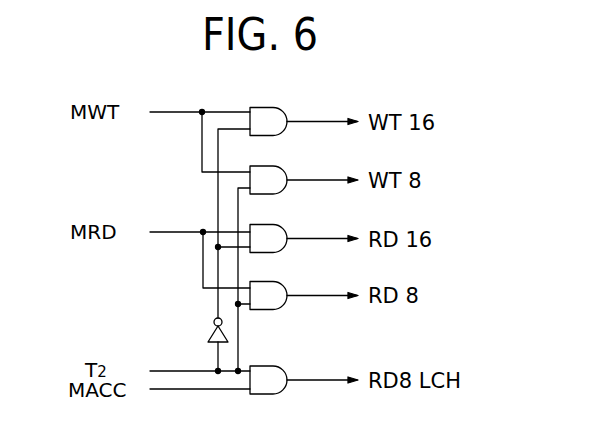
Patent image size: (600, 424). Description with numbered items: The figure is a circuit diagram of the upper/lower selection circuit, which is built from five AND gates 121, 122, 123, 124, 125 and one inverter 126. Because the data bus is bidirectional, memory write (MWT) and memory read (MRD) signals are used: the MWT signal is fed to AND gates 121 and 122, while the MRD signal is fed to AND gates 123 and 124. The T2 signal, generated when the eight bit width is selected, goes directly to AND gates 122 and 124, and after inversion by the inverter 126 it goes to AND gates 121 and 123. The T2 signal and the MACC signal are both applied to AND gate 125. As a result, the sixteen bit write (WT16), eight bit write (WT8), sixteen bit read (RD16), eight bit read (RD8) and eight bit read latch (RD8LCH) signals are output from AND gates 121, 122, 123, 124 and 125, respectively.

The AND gate 121 is at (283, 108).
The AND gate 122 is at (283, 166).
The AND gate 123 is at (283, 225).
The AND gate 124 is at (283, 282).
The AND gate 125 is at (280, 367).
The inverter 126 is at (212, 336).